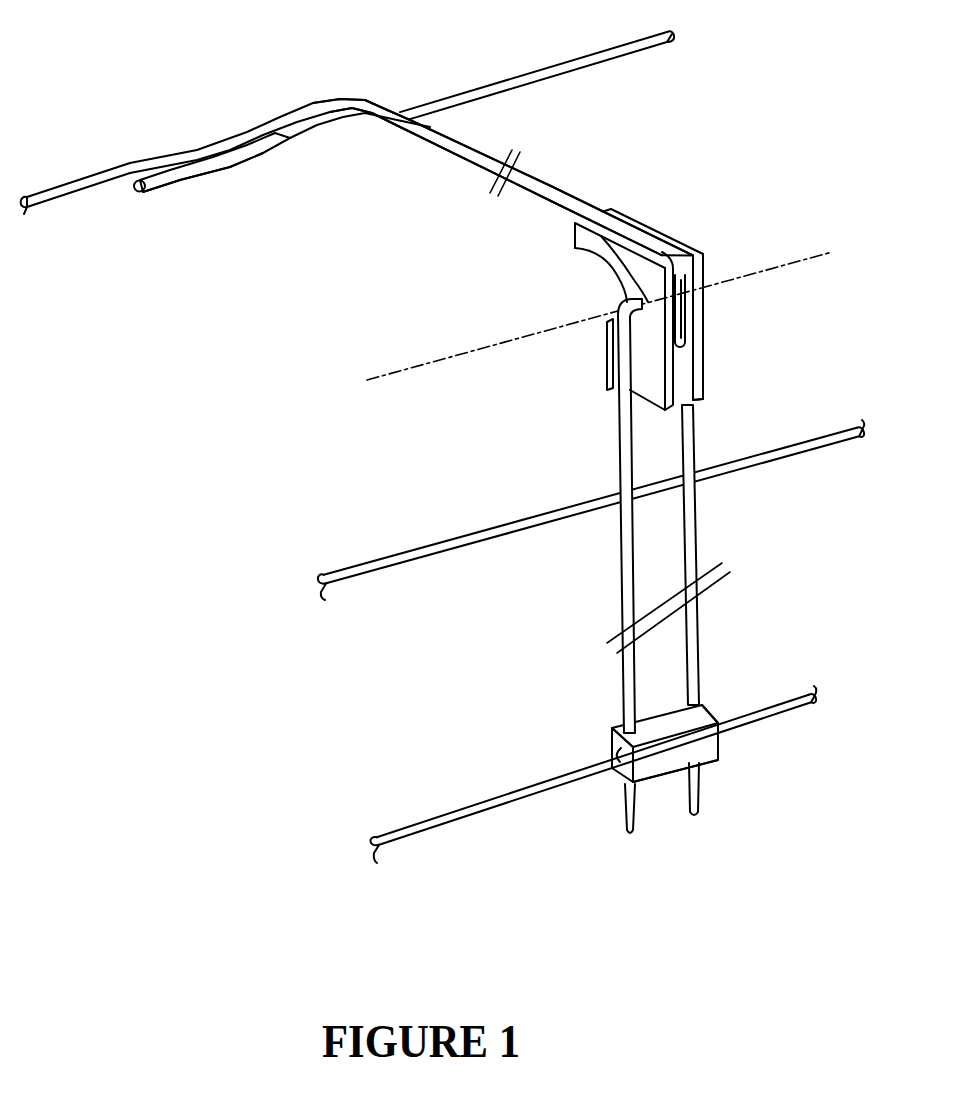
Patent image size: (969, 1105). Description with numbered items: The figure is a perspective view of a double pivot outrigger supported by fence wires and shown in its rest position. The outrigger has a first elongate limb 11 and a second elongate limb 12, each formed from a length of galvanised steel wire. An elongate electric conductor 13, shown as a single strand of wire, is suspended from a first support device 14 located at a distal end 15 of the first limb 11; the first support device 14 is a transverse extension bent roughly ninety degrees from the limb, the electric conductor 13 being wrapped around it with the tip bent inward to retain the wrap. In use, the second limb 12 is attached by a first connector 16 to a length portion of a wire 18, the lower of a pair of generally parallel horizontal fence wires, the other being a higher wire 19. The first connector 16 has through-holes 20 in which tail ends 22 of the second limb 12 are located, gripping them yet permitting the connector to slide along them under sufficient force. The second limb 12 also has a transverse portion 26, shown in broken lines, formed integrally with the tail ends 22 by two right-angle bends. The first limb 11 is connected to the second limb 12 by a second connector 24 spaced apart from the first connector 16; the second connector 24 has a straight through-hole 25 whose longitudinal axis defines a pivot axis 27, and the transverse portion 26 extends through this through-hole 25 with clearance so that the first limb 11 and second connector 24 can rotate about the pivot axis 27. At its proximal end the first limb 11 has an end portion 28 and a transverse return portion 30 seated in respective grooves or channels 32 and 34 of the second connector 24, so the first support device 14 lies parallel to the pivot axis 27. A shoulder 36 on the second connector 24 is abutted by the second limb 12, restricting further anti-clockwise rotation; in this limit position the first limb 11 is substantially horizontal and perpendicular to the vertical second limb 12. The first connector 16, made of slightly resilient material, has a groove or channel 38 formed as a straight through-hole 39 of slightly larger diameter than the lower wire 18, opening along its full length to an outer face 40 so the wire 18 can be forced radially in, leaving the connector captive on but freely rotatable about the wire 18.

The first elongate limb 11 is at (520, 170).
The second elongate limb 12 is at (654, 592).
The elongate electric conductor 13 is at (580, 56).
The first support device 14 is at (192, 148).
The distal end 15 is at (386, 99).
The first connector 16 is at (705, 709).
The wire 18 is at (422, 822).
The higher wire 19 is at (398, 562).
The through-holes 20 is at (608, 728).
The tail ends 22 is at (628, 832).
The second connector 24 is at (598, 277).
The straight through-hole 25 is at (598, 259).
The transverse portion 26 is at (574, 242).
The pivot axis 27 is at (415, 368).
The end portion 28 is at (645, 238).
The transverse return portion 30 is at (686, 313).
The groove or channel 32 is at (682, 252).
The groove or channel 34 is at (684, 361).
The shoulder 36 is at (612, 369).
The groove or channel 38 is at (648, 766).
The straight through-hole 39 is at (618, 756).
The outer face 40 is at (712, 758).